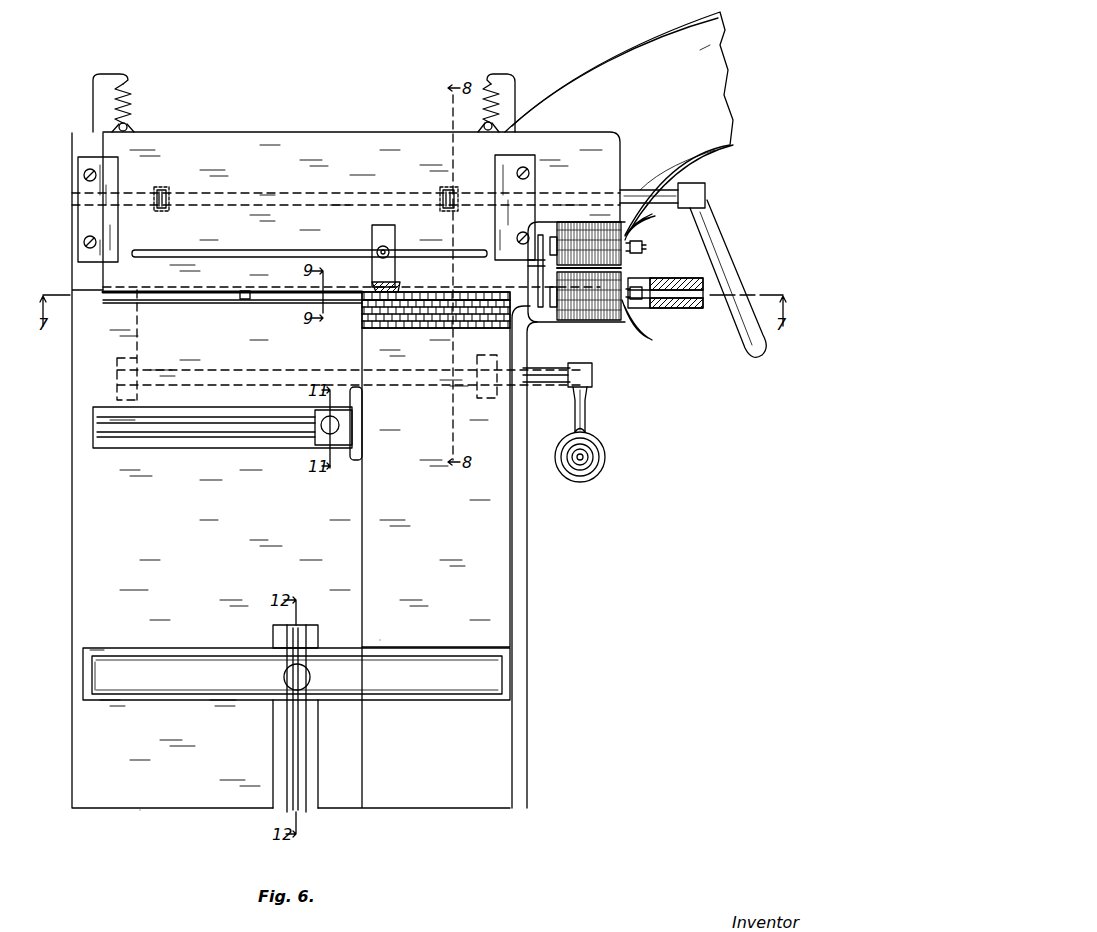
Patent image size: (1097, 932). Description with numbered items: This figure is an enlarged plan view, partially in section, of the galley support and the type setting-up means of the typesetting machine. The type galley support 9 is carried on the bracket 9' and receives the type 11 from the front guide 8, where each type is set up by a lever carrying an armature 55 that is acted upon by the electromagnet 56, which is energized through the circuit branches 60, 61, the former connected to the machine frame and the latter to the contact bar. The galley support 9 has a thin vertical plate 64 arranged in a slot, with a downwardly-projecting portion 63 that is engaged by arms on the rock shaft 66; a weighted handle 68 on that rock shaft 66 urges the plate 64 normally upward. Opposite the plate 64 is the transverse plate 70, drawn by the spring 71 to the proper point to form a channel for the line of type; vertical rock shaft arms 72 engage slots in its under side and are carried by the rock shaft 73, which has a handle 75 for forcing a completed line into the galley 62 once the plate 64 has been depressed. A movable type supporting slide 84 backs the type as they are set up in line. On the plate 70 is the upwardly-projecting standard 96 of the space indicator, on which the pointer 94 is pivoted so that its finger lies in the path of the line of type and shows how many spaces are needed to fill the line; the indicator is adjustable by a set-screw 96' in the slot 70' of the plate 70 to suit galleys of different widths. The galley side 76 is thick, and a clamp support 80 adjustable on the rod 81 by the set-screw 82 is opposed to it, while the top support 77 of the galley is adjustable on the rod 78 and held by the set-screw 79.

The type galley support 9 is at (277, 471).
The bracket 9' is at (629, 123).
The transverse plate 70 is at (346, 197).
The slot 70' is at (309, 239).
The spring 71 is at (128, 97).
The vertical rock shaft arms 72 is at (167, 197).
The set-screw 96' is at (369, 254).
The standard 96 is at (402, 276).
The pointer 94 is at (400, 297).
The movable type supporting slide 84 is at (276, 296).
The vertical plate 64 is at (200, 293).
The downwardly-projecting portion 63 is at (366, 307).
The type 11 is at (372, 325).
The galley 62 is at (495, 510).
The side 76 is at (515, 572).
The top support of the galley 77 is at (94, 688).
The rod 78 is at (288, 800).
The set-screw 79 is at (284, 678).
The rod 81 is at (252, 438).
The set-screw 82 is at (318, 432).
The clamp support 80 is at (354, 460).
The armature 55 is at (543, 240).
The electromagnet 56 is at (577, 320).
The circuit branch 60 is at (645, 238).
The circuit branch 61 is at (648, 338).
The front guide 8 is at (694, 309).
The rock shaft 73 is at (690, 190).
The handle 75 is at (758, 352).
The rock shaft 66 is at (556, 384).
The weighted handle 68 is at (593, 442).